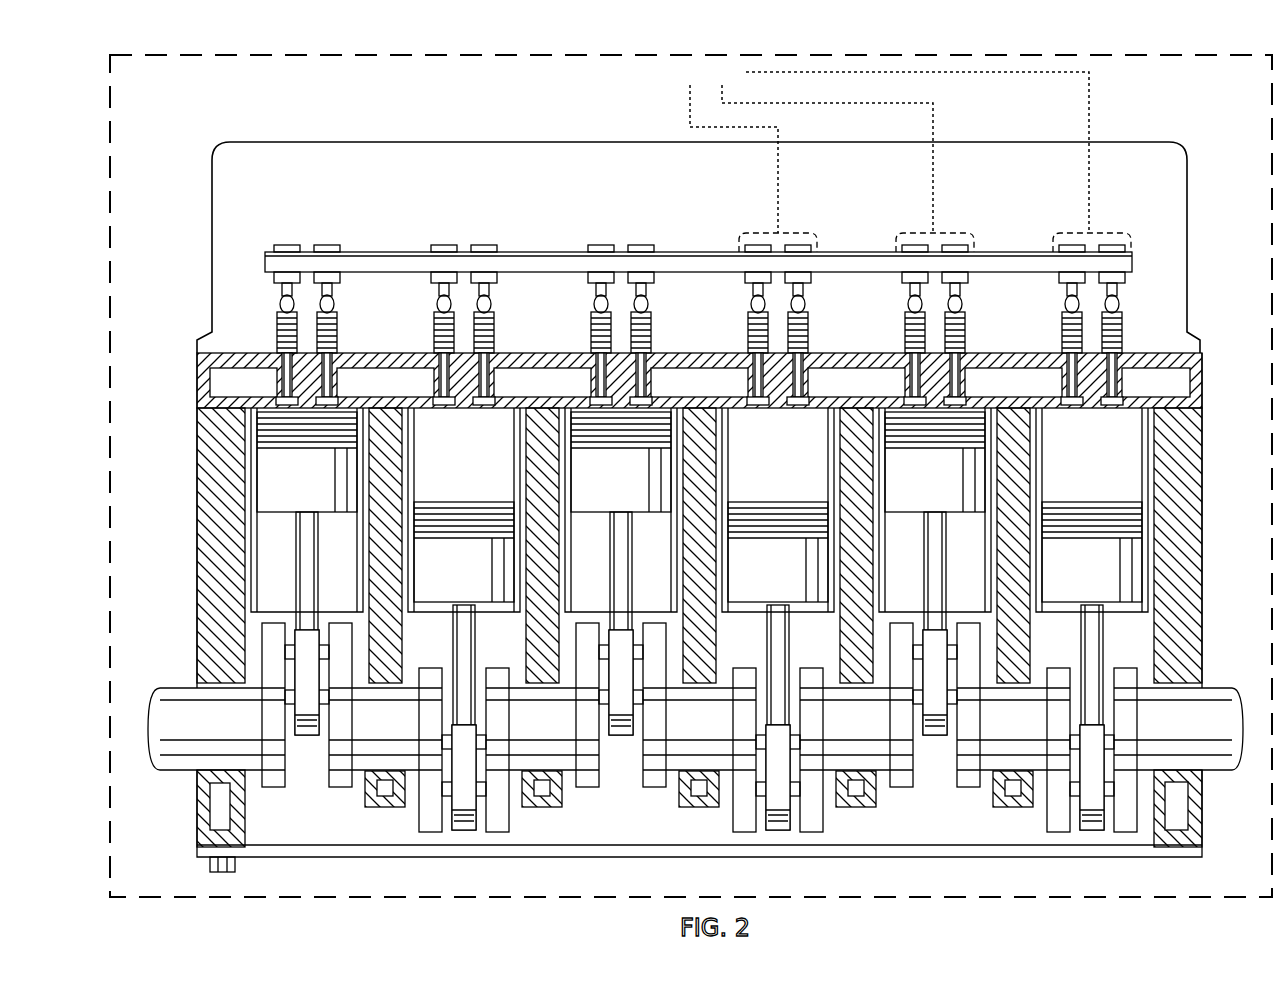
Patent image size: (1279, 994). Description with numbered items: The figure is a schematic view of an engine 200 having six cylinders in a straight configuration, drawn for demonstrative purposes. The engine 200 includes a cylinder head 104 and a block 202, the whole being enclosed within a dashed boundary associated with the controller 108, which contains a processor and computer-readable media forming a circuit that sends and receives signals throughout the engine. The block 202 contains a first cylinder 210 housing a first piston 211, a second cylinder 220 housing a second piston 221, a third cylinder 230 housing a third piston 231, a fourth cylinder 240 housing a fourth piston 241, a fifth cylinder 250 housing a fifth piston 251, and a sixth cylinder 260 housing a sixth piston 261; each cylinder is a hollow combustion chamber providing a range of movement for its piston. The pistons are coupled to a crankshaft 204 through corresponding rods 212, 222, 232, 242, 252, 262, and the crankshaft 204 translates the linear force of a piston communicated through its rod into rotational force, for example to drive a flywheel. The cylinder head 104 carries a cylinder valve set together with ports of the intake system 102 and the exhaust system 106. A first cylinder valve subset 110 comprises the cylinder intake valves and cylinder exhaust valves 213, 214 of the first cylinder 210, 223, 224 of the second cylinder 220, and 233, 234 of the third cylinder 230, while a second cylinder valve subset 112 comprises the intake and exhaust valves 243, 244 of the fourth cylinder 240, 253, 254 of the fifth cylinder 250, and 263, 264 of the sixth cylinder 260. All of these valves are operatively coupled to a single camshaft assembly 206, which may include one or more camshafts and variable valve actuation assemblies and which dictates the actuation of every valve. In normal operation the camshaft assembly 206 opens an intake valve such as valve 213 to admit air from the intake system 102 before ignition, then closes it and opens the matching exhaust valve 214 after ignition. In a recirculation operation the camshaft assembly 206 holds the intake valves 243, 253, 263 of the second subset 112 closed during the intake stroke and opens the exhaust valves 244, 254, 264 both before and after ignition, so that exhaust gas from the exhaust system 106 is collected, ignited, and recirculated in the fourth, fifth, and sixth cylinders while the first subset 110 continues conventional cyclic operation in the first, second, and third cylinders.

The engine 200 is at (92, 79).
The controller 108 is at (265, 55).
The cylinder head 104 is at (190, 133).
The block 202 is at (190, 408).
The crankshaft 204 is at (1225, 686).
The first cylinder valve subset 110 is at (270, 222).
The second cylinder valve subset 112 is at (738, 222).
The camshaft assembly 206 is at (712, 258).
The intake system 102 is at (700, 382).
The exhaust system 106 is at (699, 382).
The first cylinder 210 is at (307, 571).
The first piston 211 is at (307, 462).
The rod 212 is at (296, 548).
The cylinder intake valve 213 is at (277, 340).
The cylinder exhaust valve 214 is at (337, 340).
The second cylinder 220 is at (464, 619).
The second piston 221 is at (464, 552).
The rod 222 is at (453, 650).
The cylinder intake valve 223 is at (494, 340).
The cylinder exhaust valve 224 is at (434, 340).
The third cylinder 230 is at (621, 571).
The third piston 231 is at (621, 462).
The rod 232 is at (610, 548).
The cylinder intake valve 233 is at (591, 340).
The cylinder exhaust valve 234 is at (651, 340).
The fourth cylinder 240 is at (778, 619).
The fourth piston 241 is at (778, 552).
The rod 242 is at (767, 650).
The cylinder intake valve 243 is at (808, 340).
The cylinder exhaust valve 244 is at (748, 340).
The fifth cylinder 250 is at (935, 571).
The fifth piston 251 is at (935, 462).
The rod 252 is at (924, 548).
The cylinder intake valve 253 is at (905, 340).
The cylinder exhaust valve 254 is at (965, 340).
The sixth cylinder 260 is at (1092, 619).
The sixth piston 261 is at (1092, 552).
The rod 262 is at (1081, 650).
The cylinder intake valve 263 is at (1122, 340).
The cylinder exhaust valve 264 is at (1062, 340).